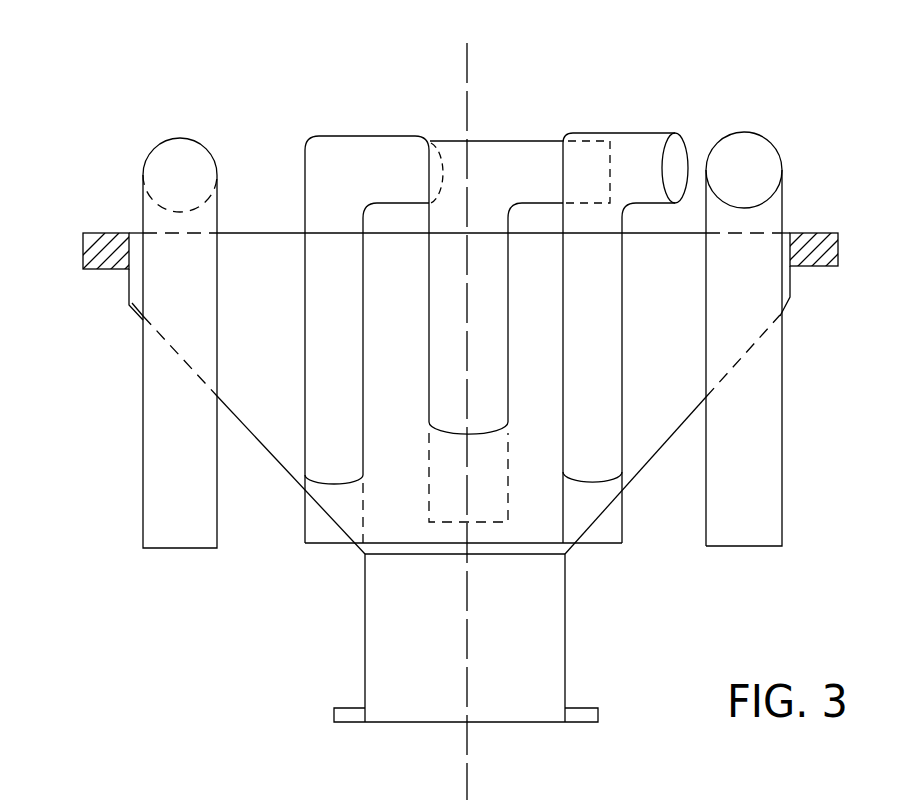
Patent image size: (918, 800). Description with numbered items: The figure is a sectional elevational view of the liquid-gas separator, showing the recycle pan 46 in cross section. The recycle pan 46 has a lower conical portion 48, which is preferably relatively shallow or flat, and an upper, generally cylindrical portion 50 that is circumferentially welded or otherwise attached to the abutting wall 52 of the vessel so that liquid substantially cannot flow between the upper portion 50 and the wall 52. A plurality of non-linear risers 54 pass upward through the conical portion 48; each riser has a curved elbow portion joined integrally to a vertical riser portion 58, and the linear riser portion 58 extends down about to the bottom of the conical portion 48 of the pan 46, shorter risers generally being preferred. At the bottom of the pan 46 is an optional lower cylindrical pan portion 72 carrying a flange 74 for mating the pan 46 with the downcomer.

The recycle pan 46 is at (183, 383).
The lower conical portion 48 is at (647, 464).
The upper cylindrical portion 50 is at (790, 284).
The abutting wall 52 is at (82, 250).
The non-linear risers 54 is at (468, 118).
The vertical riser portion 58 is at (782, 497).
The lower cylindrical pan portion 72 is at (565, 617).
The flange 74 is at (585, 706).